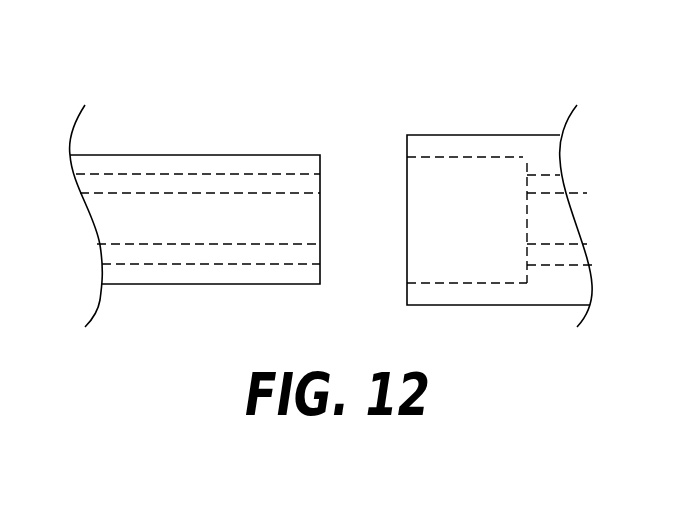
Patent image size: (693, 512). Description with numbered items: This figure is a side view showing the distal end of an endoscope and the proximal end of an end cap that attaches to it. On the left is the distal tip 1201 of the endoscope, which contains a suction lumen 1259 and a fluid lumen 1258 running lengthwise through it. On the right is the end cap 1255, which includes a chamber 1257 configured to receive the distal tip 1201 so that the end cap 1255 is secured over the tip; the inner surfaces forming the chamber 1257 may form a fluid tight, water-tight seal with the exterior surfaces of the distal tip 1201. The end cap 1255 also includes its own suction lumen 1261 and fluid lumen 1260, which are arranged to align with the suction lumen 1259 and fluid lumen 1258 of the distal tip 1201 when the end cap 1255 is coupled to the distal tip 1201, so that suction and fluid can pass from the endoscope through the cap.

The distal tip 1201 is at (193, 126).
The suction lumen 1259 is at (113, 174).
The fluid lumen 1258 is at (197, 265).
The end cap 1255 is at (493, 110).
The chamber 1257 is at (498, 181).
The suction lumen 1261 is at (538, 193).
The fluid lumen 1260 is at (553, 265).